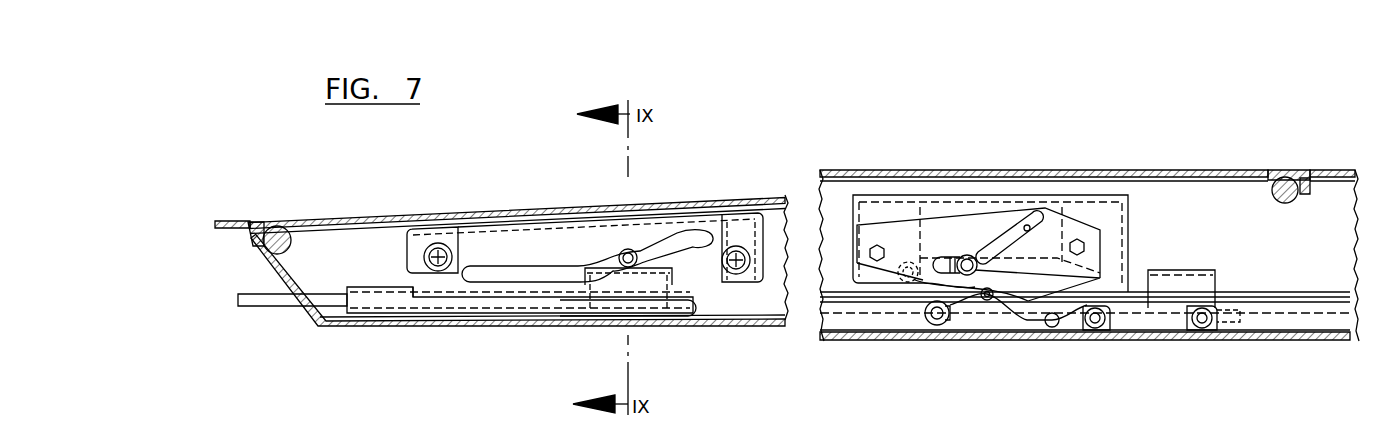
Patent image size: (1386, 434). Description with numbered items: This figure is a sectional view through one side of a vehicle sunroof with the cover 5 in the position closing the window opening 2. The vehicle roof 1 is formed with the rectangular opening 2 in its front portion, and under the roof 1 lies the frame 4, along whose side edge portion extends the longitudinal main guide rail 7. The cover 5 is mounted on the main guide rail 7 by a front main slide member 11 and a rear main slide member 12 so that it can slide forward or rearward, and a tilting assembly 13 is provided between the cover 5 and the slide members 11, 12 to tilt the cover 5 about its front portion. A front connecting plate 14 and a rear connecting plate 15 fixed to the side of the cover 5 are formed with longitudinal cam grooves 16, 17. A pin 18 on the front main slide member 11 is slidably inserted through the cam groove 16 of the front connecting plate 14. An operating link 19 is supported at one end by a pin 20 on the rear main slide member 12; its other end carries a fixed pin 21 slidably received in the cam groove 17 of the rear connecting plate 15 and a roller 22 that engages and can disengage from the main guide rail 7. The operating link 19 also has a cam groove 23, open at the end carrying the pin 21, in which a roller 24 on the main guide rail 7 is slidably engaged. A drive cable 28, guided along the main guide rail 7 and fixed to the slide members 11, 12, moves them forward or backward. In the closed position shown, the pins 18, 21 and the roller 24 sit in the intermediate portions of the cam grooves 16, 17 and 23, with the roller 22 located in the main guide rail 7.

The vehicle roof 1 is at (229, 223).
The rectangular opening 2 is at (1288, 170).
The frame 4 is at (303, 318).
The cover 5 is at (692, 204).
The main guide rail 7 is at (757, 319).
The front main slide member 11 is at (593, 309).
The rear main slide member 12 is at (1177, 289).
The tilting assembly 13 is at (1147, 210).
The front connecting plate 14 is at (550, 254).
The rear connecting plate 15 is at (1050, 224).
The cam groove 16 is at (516, 278).
The cam groove 17 is at (1021, 224).
The pin 18 is at (630, 250).
The operating link 19 is at (1010, 321).
The pin 20 is at (1093, 331).
The fixed pin 21 is at (964, 255).
The roller 22 is at (947, 324).
The cam groove 23 is at (1058, 318).
The roller 24 is at (987, 301).
The drive cable 28 is at (258, 306).